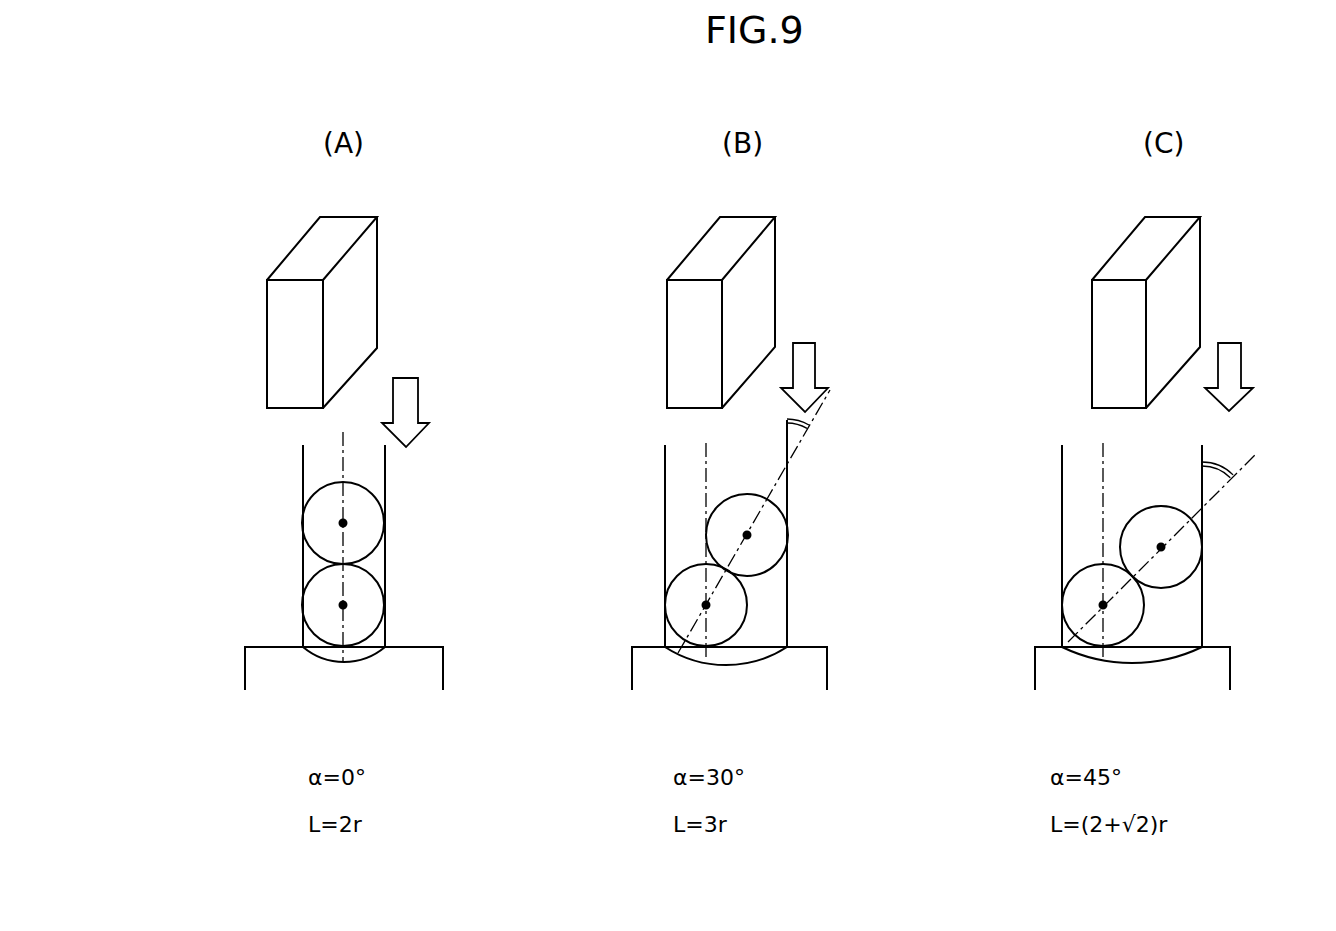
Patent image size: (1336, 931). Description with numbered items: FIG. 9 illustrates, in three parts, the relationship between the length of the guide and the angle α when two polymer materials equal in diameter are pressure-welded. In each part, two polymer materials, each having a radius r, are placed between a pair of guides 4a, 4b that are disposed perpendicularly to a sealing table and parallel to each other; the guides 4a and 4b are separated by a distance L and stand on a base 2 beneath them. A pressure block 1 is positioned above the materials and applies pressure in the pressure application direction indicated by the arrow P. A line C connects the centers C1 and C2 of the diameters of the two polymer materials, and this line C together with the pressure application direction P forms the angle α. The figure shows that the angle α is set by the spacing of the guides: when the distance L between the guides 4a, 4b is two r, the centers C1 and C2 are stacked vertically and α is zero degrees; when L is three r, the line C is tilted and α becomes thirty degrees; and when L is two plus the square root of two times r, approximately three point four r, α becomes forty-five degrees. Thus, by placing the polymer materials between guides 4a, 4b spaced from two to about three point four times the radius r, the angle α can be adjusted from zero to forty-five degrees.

The pressure block 1 is at (367, 255).
The base 2 is at (260, 675).
The guide 4a is at (303, 478).
The guide 4b is at (385, 475).
The line connecting centers C is at (806, 521).
The center of first polymer material C1 is at (343, 605).
The center of second polymer material C2 is at (343, 523).
The distance between guides L is at (345, 665).
The pressing force P is at (407, 407).